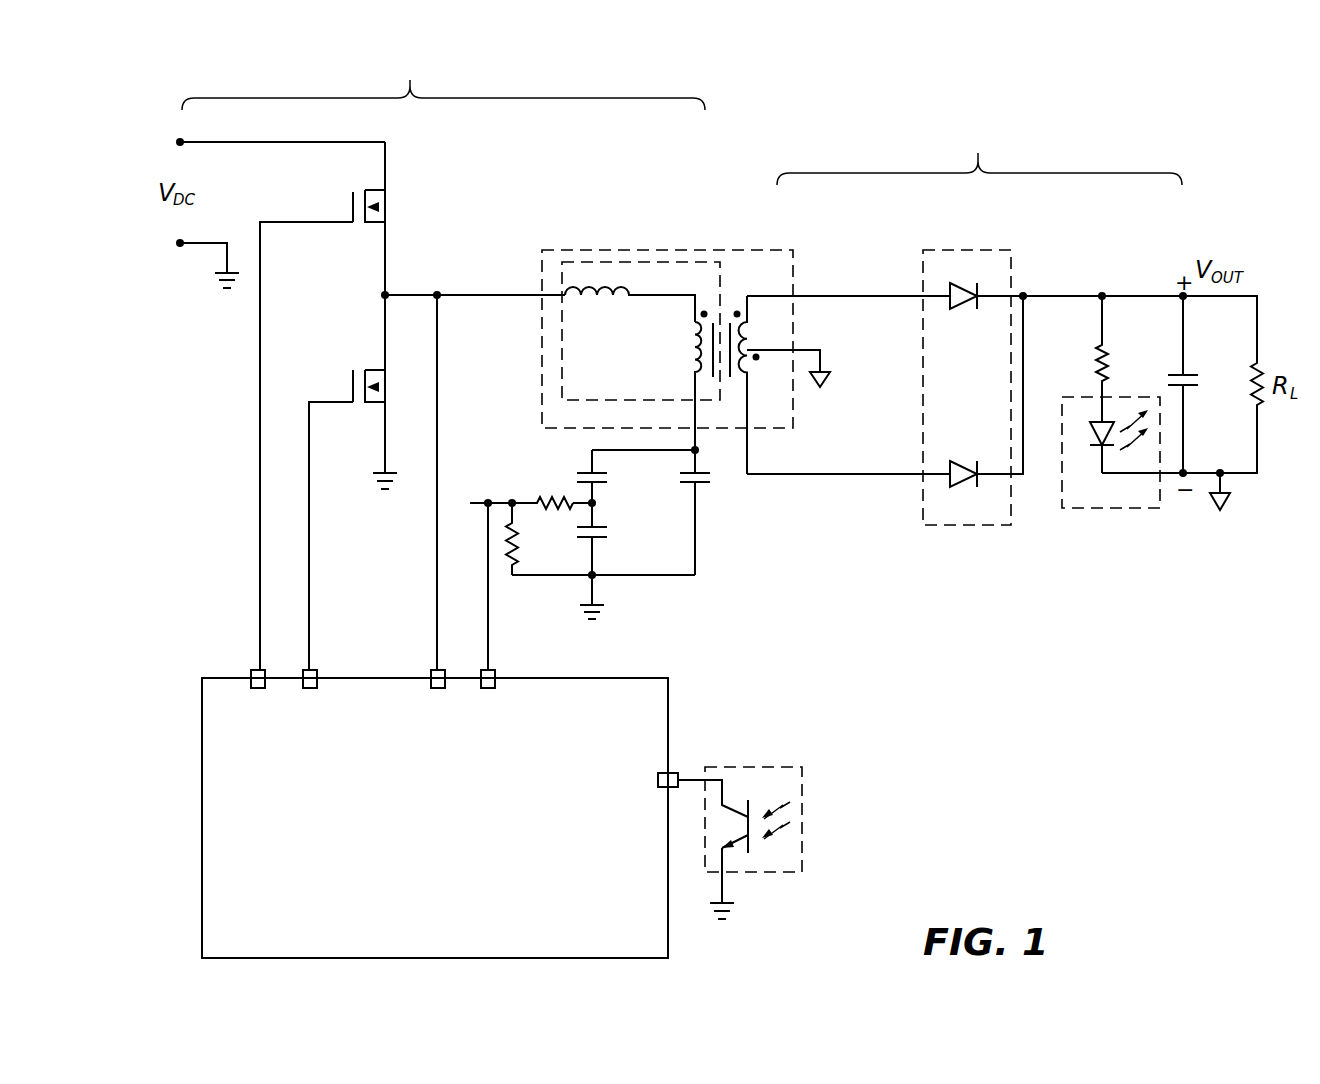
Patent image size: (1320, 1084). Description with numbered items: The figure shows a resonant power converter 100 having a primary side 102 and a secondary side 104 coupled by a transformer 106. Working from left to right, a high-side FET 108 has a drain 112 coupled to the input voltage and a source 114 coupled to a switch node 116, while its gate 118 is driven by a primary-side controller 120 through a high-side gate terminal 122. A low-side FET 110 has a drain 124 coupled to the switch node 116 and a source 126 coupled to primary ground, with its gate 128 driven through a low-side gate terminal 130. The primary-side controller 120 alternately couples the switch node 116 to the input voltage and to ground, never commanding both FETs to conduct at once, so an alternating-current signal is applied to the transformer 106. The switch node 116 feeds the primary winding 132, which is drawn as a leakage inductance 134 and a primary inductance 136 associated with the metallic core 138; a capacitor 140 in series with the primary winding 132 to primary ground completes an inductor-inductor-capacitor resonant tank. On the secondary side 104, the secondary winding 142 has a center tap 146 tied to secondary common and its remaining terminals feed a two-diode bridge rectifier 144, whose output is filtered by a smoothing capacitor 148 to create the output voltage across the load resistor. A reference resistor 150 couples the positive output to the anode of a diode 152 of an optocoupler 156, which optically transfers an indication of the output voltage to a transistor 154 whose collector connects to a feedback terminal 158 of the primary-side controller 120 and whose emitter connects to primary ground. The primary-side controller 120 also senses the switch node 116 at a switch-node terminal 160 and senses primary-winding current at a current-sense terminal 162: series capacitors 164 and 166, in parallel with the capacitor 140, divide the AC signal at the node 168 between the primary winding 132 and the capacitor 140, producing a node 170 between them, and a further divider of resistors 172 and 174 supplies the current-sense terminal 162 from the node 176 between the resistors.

The resonant power converter 100 is at (165, 102).
The primary side 102 is at (410, 80).
The secondary side 104 is at (978, 153).
The transformer 106 is at (770, 250).
The high-side field effect transistor 108 is at (393, 197).
The low-side field effect transistor 110 is at (375, 353).
The drain 112 is at (387, 157).
The source 114 is at (387, 230).
The switch node 116 is at (388, 295).
The gate 118 is at (332, 215).
The primary-side controller 120 is at (418, 848).
The high-side gate terminal 122 is at (252, 672).
The drain 124 is at (385, 330).
The source 126 is at (385, 422).
The gate 128 is at (340, 398).
The low-side gate terminal 130 is at (317, 675).
The primary winding 132 is at (625, 262).
The leakage inductance 134 is at (590, 300).
The primary inductance 136 is at (690, 355).
The metallic core 138 is at (728, 302).
The capacitor 140 is at (708, 490).
The secondary winding 142 is at (752, 335).
The bridge rectifier 144 is at (1011, 255).
The center tap 146 is at (822, 355).
The smoothing capacitor 148 is at (1190, 375).
The reference resistor 150 is at (1090, 375).
The diode 152 is at (1088, 455).
The transistor 154 is at (752, 795).
The optocoupler 156 is at (1130, 508).
The feedback terminal 158 is at (672, 772).
The switch-node terminal 160 is at (432, 672).
The current-sense terminal 162 is at (497, 675).
The capacitor 164 is at (603, 485).
The capacitor 166 is at (603, 537).
The node 168 is at (695, 450).
The node 170 is at (590, 500).
The resistor 172 is at (510, 553).
The resistor 174 is at (558, 510).
The node 176 is at (470, 503).